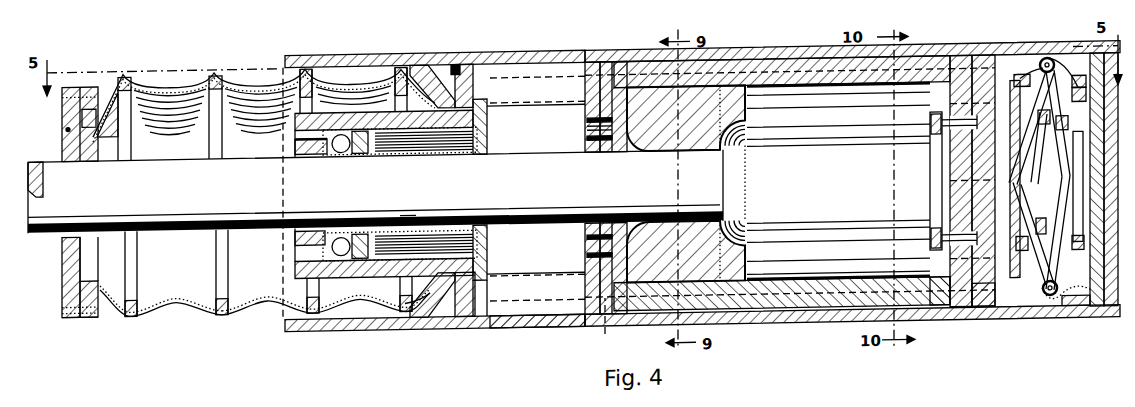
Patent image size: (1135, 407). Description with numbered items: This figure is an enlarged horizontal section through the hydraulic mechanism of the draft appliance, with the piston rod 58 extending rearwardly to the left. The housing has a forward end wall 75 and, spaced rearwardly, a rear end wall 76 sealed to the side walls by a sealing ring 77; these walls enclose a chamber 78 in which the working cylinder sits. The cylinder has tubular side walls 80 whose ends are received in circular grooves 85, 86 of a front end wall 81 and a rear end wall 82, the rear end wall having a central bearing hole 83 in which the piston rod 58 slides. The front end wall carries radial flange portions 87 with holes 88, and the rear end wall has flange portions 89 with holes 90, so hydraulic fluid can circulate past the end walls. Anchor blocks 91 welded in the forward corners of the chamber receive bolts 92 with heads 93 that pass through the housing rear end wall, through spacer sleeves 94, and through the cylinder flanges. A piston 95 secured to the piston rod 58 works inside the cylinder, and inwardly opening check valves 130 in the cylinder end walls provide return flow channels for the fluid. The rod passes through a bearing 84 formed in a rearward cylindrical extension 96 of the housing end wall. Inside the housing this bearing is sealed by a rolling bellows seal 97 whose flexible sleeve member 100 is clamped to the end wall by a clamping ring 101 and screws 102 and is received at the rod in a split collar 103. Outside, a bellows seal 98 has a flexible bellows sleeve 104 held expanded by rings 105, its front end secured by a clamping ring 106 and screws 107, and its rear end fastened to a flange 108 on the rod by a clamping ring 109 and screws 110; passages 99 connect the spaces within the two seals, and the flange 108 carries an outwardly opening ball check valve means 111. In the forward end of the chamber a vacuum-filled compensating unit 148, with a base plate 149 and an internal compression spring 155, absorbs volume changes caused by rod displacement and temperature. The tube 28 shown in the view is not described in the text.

The piston rod 58 is at (50, 242).
The ball check valve means 111 is at (62, 127).
The flange 108 is at (63, 280).
The clamping ring 109 is at (94, 312).
The screws 110 is at (74, 310).
The bellows seal 98 is at (181, 312).
The flexible bellows sleeve 104 is at (258, 310).
The rings 105 is at (216, 264).
The holes or passages 99 is at (295, 148).
The bearing 84 is at (320, 154).
The rearward cylindrical extension 96 is at (355, 262).
The flexible sleeve member 100 is at (437, 128).
The split collar 103 is at (380, 262).
The rolling bellows seal 97 is at (408, 214).
The spacer sleeves 94 is at (490, 114).
The clamping ring 101 is at (487, 250).
The screws 102 is at (477, 298).
The rear end wall 76 is at (472, 70).
The sealing ring 77 is at (456, 62).
The heads 93 is at (446, 328).
The screws 107 is at (472, 328).
The clamping ring 106 is at (416, 326).
The housing 28 is at (355, 44).
The chamber 78 is at (537, 140).
The rear end wall 82 is at (590, 62).
The circular groove 86 is at (612, 62).
The central bearing hole 83 is at (586, 148).
The radial flange portions 89 is at (592, 304).
The holes 90 is at (593, 333).
The bolts 92 is at (541, 328).
The tubular side walls 80 is at (790, 72).
The piston 95 is at (748, 272).
The circular groove 85 is at (962, 62).
The front end wall 81 is at (988, 62).
The check valves 130 is at (932, 192).
The flange portions 87 is at (950, 324).
The holes 88 is at (980, 326).
The anchor blocks 91 is at (1022, 62).
The compression spring 155 is at (1020, 86).
The end wall 75 is at (1090, 90).
The base plate 149 is at (1090, 294).
The compensating unit 148 is at (1071, 316).